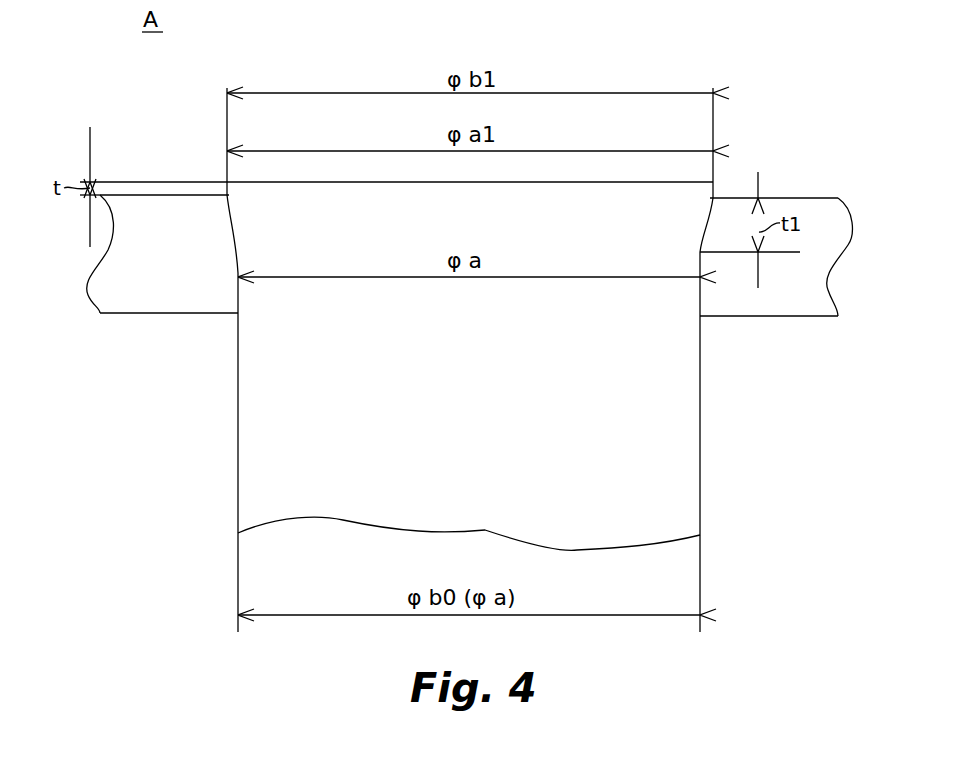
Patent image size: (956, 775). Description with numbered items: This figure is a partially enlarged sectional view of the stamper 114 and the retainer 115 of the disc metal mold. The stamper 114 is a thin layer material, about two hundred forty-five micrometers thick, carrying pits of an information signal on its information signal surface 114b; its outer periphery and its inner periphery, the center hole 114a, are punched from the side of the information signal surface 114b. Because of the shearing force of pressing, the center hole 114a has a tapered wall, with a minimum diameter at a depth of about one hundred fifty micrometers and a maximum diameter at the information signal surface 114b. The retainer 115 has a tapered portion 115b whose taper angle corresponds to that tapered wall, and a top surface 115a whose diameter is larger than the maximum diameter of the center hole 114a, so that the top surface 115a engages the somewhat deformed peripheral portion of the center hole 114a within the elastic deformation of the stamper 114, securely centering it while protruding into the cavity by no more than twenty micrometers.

The stamper 114 is at (808, 287).
The center hole 114a is at (701, 298).
The information signal surface 114b is at (808, 198).
The retainer 115 is at (662, 428).
The top surface 115a is at (602, 182).
The tapered portion 115b is at (232, 230).